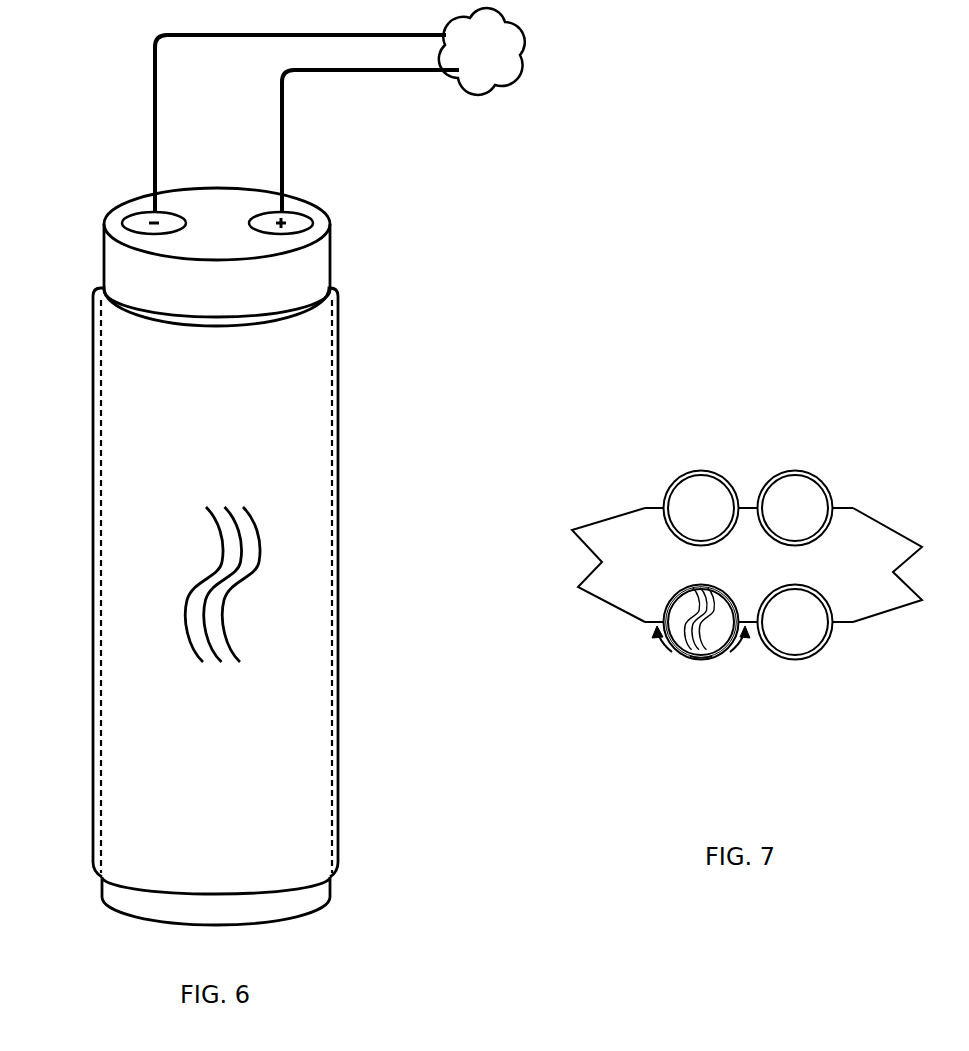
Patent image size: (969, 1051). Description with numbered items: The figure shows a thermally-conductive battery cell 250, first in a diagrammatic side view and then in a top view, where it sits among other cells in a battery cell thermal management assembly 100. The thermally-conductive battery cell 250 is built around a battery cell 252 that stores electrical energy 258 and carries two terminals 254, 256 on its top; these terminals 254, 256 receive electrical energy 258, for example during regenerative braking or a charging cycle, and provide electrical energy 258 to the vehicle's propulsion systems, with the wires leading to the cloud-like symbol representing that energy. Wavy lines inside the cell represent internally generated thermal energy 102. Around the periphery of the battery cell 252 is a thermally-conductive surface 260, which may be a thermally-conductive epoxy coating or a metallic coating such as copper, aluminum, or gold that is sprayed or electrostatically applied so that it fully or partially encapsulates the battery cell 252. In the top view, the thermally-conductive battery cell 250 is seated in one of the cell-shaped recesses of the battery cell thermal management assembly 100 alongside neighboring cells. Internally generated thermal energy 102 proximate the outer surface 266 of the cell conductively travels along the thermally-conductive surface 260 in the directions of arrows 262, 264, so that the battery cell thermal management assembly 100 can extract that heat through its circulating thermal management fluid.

In FIG. 7, the battery cell thermal management assembly 100 is at (640, 487).
In FIG. 6, the internally generated thermal energy 102 is at (227, 613).
In FIG. 7, the internally generated thermal energy 102 is at (718, 610).
In FIG. 6, the thermally-conductive battery cell 250 is at (80, 55).
In FIG. 6, the battery cell 252 is at (333, 250).
In FIG. 7, the battery cell 252 is at (672, 619).
In FIG. 6, the terminal 254 is at (300, 228).
In FIG. 6, the terminal 256 is at (133, 223).
In FIG. 6, the electrical energy 258 is at (340, 110).
In FIG. 6, the thermally-conductive surface 260 is at (338, 479).
In FIG. 7, the thermally-conductive surface 260 is at (670, 642).
In FIG. 7, the arrow 262 is at (685, 665).
In FIG. 7, the arrow 264 is at (720, 665).
In FIG. 7, the outer surface 266 is at (702, 680).